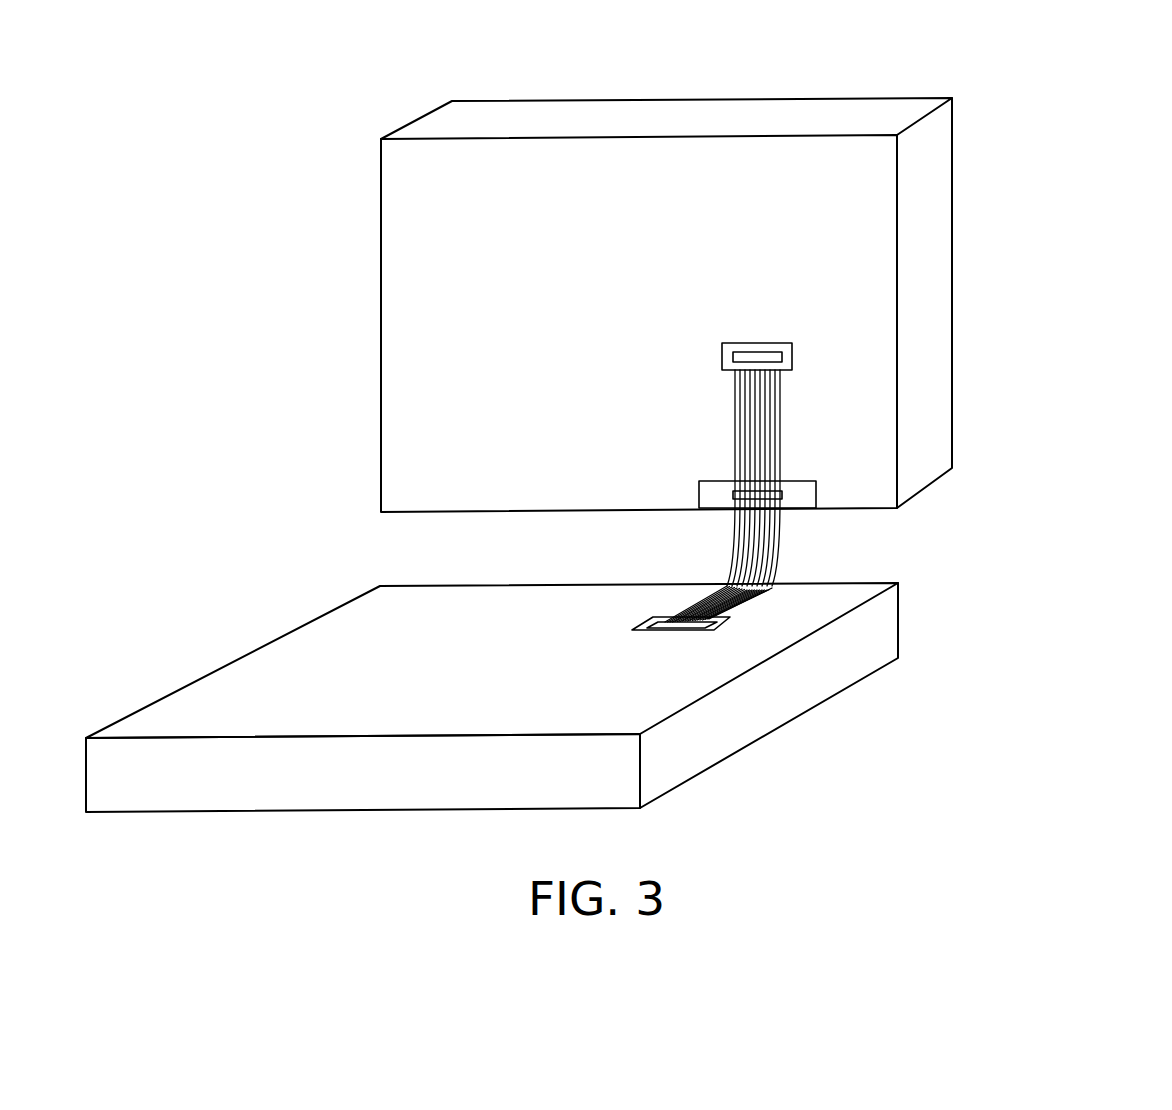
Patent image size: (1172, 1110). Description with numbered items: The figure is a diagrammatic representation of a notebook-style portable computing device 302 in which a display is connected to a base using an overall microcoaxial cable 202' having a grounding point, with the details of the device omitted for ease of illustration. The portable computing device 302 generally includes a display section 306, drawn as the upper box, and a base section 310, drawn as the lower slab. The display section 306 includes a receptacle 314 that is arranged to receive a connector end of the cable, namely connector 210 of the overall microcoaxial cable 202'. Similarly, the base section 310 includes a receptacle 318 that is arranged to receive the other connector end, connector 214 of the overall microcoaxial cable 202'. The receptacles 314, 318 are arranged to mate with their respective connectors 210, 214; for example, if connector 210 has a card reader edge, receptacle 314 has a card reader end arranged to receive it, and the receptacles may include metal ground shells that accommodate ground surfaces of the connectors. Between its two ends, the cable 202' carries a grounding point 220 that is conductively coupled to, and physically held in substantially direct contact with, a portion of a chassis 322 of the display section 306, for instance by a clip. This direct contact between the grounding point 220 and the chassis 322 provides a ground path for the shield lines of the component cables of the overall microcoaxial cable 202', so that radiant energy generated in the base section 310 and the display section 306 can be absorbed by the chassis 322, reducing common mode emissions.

The portable computing device 302 is at (1046, 89).
The display section 306 is at (933, 172).
The base section 310 is at (880, 626).
The connector 210 is at (782, 357).
The receptacle 314 is at (792, 365).
The chassis 322 is at (816, 494).
The grounding point 220 is at (782, 495).
The overall microcoaxial cable 202' is at (804, 496).
The connector 214 is at (722, 622).
The receptacle 318 is at (685, 632).